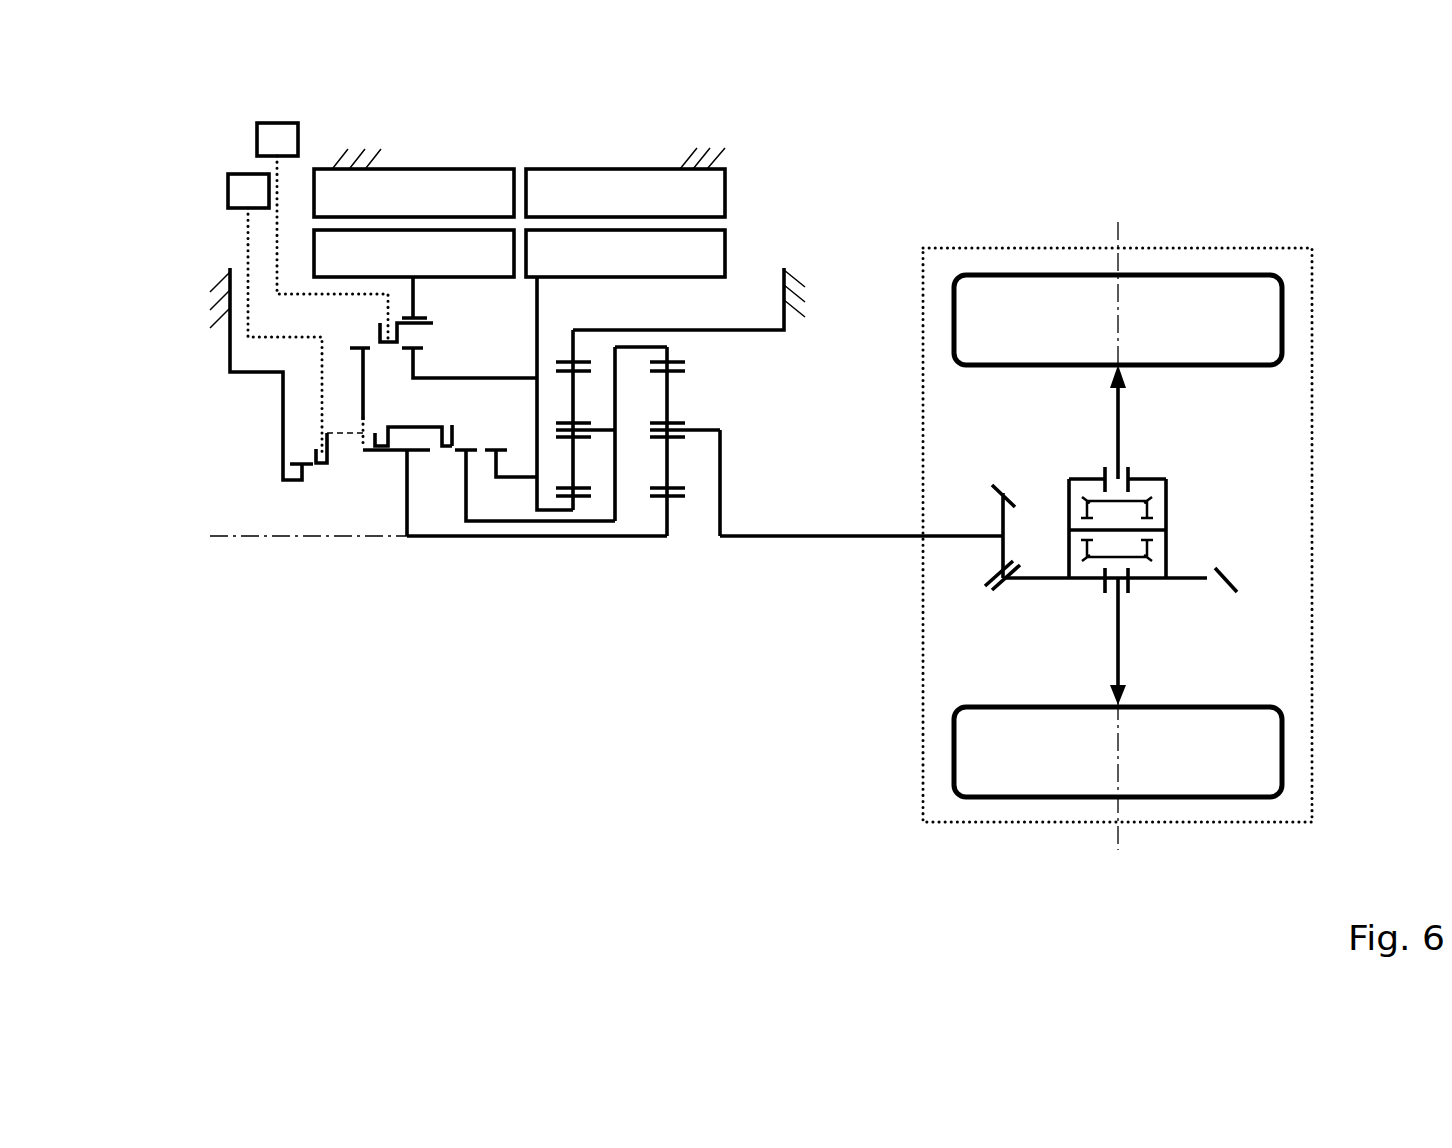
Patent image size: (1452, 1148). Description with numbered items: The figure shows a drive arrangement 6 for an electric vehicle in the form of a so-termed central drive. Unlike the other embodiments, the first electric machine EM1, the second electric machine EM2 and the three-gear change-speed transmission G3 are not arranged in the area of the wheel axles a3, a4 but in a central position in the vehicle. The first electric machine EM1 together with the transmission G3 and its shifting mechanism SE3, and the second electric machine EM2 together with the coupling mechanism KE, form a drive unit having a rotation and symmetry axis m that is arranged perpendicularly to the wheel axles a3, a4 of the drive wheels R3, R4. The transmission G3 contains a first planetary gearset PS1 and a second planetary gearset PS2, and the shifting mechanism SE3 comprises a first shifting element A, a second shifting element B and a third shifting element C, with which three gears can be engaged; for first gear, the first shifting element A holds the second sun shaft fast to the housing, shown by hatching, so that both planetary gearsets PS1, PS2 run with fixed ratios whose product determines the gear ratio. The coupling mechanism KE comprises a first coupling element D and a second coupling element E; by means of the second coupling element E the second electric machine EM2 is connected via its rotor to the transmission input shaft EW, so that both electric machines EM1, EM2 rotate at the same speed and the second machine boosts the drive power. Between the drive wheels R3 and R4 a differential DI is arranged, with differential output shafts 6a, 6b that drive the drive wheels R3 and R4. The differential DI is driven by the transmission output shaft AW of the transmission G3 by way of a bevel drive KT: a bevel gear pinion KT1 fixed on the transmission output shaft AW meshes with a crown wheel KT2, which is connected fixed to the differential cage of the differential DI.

The second electric machine EM2 is at (418, 158).
The first electric machine EM1 is at (632, 158).
The transmission input shaft EW is at (540, 303).
The coupling mechanism KE is at (367, 315).
The first shifting element A is at (286, 387).
The second shifting element B is at (531, 485).
The third shifting element C is at (511, 478).
The first coupling element D is at (366, 384).
The second coupling element E is at (469, 363).
The shifting mechanism SE3 is at (393, 462).
The rotation and symmetry axis m is at (247, 535).
The three-gear change-speed transmission G3 is at (617, 650).
The first planetary gearset PS1 is at (573, 570).
The second planetary gearset PS2 is at (667, 570).
The transmission output shaft AW is at (787, 536).
The drive arrangement 6 is at (848, 297).
The bevel gear pinion KT1 is at (1007, 513).
The bevel drive KT is at (988, 608).
The crown wheel KT2 is at (1197, 583).
The differential DI is at (1177, 505).
The differential output shaft 6b is at (1118, 410).
The differential output shaft 6a is at (1118, 640).
The wheel axle a4 is at (1118, 318).
The wheel axle a3 is at (1117, 753).
The drive wheel R4 is at (1258, 312).
The drive wheel R3 is at (1258, 750).